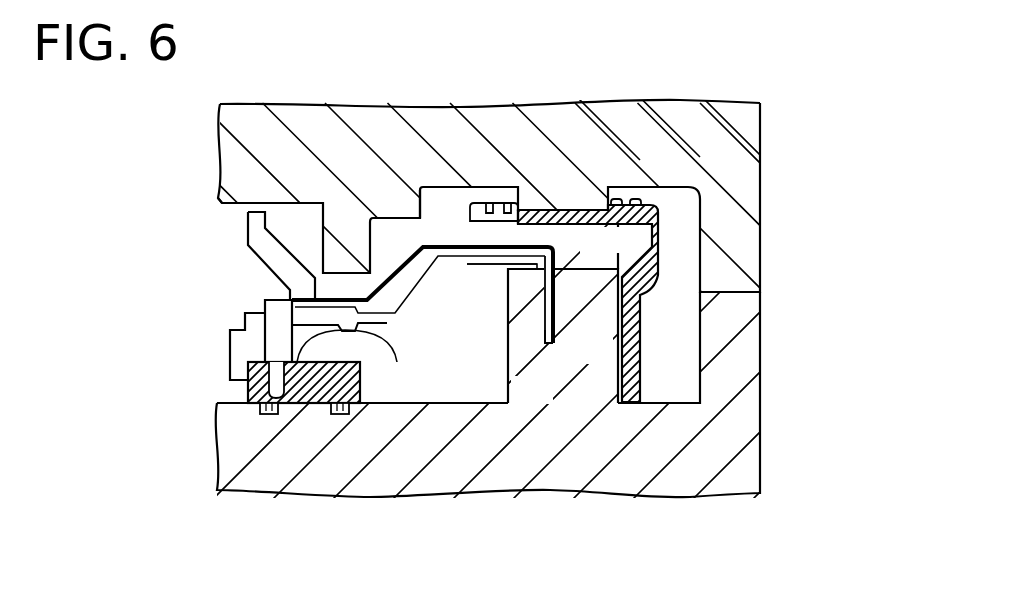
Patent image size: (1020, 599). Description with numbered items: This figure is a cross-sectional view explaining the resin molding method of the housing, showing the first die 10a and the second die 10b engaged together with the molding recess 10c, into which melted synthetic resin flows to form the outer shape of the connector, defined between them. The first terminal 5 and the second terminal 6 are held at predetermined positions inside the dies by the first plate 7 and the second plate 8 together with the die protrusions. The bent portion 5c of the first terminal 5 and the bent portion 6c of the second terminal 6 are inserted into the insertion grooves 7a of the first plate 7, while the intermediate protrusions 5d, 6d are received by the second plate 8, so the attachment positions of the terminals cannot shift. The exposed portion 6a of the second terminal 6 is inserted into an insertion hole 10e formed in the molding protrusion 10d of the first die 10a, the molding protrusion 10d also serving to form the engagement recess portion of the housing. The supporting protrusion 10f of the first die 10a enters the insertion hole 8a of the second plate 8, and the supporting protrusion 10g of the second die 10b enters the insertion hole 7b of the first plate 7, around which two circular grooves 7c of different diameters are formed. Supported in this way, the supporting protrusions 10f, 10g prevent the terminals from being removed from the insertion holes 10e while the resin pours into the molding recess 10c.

The first terminal 5 is at (400, 317).
The bent portion of the first terminal 5c is at (490, 201).
The intermediate protrusion of the first terminal 5d is at (362, 385).
The second terminal 6 is at (418, 249).
The exposed portion of the second terminal 6a is at (537, 342).
The bent portion of the second terminal 6c is at (530, 258).
The intermediate protrusion of the second terminal 6d is at (260, 414).
The first plate 7 is at (650, 275).
The insertion groove 7a is at (440, 200).
The insertion hole of the first plate 7b is at (527, 209).
The circular grooves 7c is at (636, 199).
The second plate 8 is at (247, 390).
The insertion hole of the second plate 8a is at (306, 405).
The first die 10a is at (753, 397).
The second die 10b is at (753, 197).
The molding recess 10c is at (223, 203).
The molding protrusion 10d is at (513, 340).
The insertion holes of the first die 10e is at (570, 308).
The supporting protrusion of the first die 10f is at (244, 332).
The supporting protrusion of the second die 10g is at (572, 263).